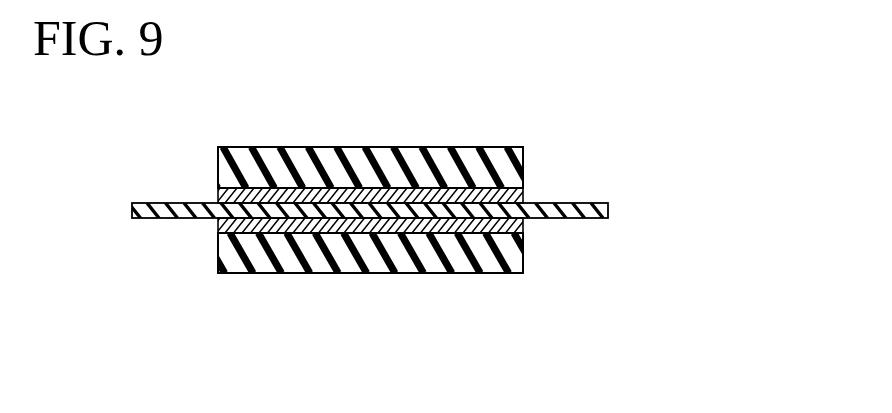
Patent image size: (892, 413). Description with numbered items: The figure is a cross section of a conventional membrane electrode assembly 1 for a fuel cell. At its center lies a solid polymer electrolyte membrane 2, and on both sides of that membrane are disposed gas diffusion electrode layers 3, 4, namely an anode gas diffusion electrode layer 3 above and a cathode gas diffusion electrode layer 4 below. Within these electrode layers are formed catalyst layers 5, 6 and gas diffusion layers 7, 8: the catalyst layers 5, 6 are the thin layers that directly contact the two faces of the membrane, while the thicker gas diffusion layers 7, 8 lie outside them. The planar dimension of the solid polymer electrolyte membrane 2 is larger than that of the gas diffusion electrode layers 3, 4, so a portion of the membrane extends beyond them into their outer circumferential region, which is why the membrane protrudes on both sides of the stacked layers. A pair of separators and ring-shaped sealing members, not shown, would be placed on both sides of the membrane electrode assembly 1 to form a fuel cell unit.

The membrane electrode assembly 1 is at (426, 202).
The solid polymer electrolyte membrane 2 is at (184, 206).
The anode gas diffusion electrode layer 3 is at (377, 103).
The cathode gas diffusion electrode layer 4 is at (384, 309).
The catalyst layer 5 is at (386, 187).
The catalyst layer 6 is at (408, 258).
The gas diffusion layer 7 is at (331, 162).
The gas diffusion layer 8 is at (357, 221).